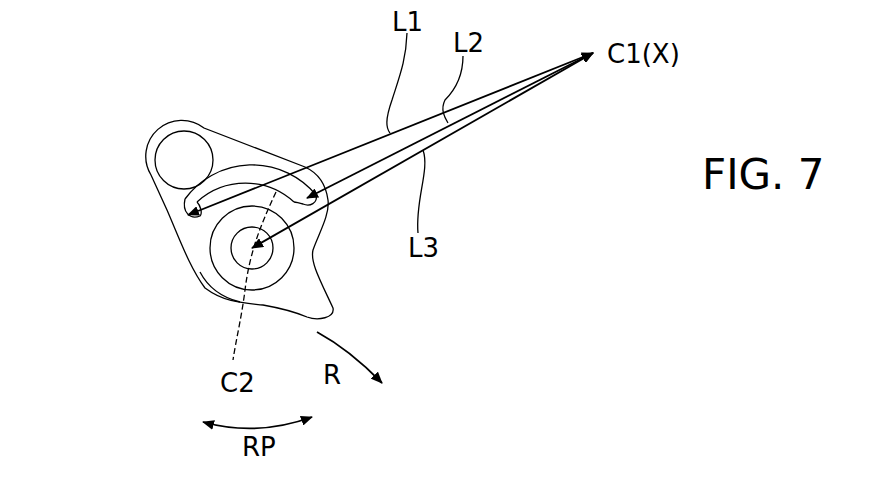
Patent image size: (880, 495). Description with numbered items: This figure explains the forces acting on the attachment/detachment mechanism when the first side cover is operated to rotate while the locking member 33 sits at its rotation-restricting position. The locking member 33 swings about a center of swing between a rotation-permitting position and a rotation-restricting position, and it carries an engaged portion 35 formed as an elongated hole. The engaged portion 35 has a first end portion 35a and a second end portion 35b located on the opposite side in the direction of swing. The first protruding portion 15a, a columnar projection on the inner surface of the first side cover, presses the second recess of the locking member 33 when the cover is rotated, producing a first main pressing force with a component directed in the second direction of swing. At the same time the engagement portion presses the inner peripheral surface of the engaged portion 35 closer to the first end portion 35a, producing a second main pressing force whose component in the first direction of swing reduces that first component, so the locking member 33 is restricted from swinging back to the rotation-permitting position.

The locking member 33 is at (147, 128).
The engaged portion 35 is at (243, 173).
The first end portion 35a is at (187, 218).
The second end portion 35b is at (290, 256).
The first protruding portion 15a is at (188, 287).